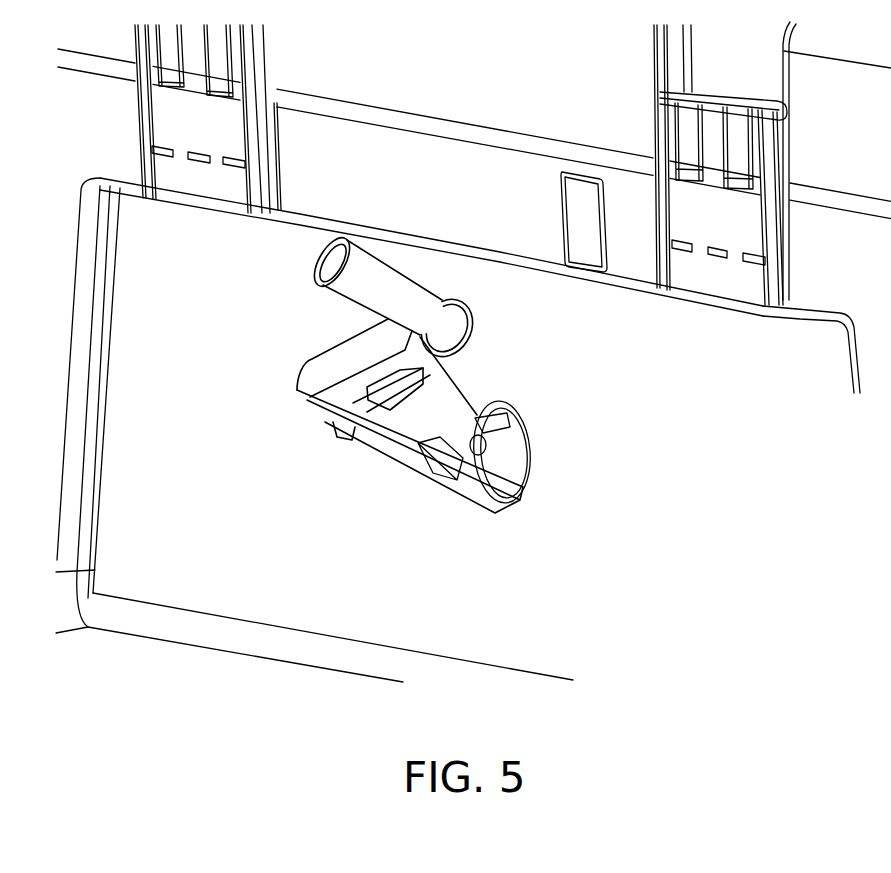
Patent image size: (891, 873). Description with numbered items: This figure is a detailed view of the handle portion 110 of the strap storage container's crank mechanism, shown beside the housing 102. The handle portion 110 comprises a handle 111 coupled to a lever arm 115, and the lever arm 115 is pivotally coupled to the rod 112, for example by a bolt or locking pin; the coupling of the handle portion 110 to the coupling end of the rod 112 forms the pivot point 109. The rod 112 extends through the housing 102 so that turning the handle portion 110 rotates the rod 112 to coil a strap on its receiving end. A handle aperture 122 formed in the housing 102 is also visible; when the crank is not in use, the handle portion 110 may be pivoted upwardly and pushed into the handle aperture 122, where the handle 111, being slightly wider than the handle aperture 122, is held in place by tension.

The housing 102 is at (186, 453).
The pivot point 109 is at (486, 443).
The handle portion 110 is at (272, 451).
The handle 111 is at (327, 259).
The rod 112 is at (445, 472).
The lever arm 115 is at (338, 357).
The handle aperture 122 is at (581, 258).